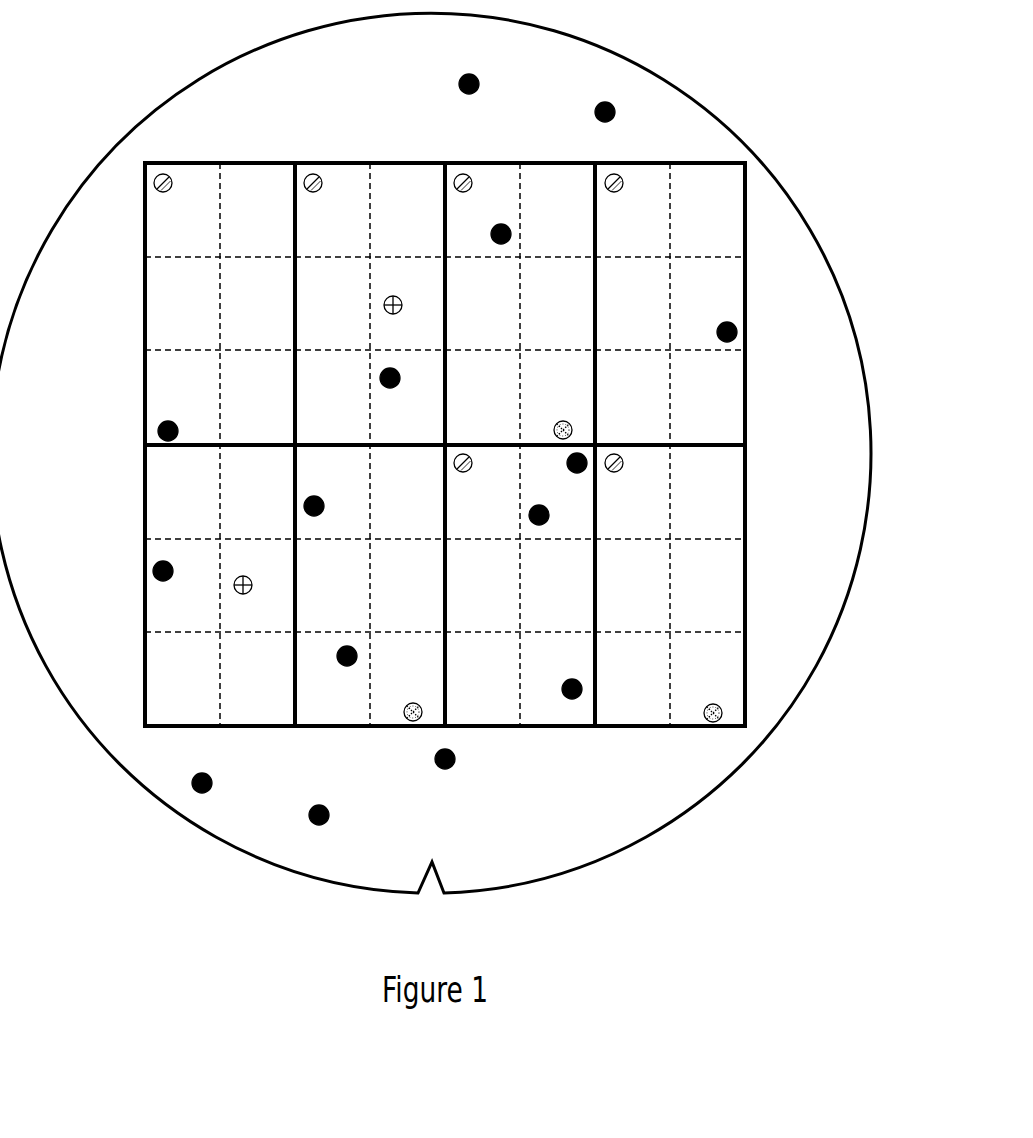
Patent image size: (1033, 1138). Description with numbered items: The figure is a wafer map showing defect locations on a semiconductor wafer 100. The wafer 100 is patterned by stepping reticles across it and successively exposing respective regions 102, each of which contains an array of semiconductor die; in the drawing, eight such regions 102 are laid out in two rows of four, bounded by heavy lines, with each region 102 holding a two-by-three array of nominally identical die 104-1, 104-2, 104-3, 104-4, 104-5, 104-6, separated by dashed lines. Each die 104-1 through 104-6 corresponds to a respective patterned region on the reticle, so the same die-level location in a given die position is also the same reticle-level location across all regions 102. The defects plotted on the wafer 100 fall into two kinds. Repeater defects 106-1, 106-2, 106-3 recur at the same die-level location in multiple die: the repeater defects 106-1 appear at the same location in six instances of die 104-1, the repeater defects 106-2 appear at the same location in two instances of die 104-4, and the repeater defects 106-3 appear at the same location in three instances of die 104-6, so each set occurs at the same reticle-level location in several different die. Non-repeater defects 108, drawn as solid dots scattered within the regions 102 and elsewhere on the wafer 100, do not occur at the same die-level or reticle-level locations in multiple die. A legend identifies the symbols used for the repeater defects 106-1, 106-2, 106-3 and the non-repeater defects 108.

The semiconductor wafer 100 is at (455, 57).
The region 102 is at (195, 163).
The semiconductor die 104-1 is at (205, 246).
The semiconductor die 104-2 is at (280, 246).
The semiconductor die 104-3 is at (205, 340).
The semiconductor die 104-4 is at (280, 340).
The semiconductor die 104-5 is at (205, 382).
The semiconductor die 104-6 is at (280, 382).
The repeater defects 106-1 is at (514, 542).
The repeater defects 106-2 is at (554, 627).
The repeater defects 106-3 is at (639, 715).
The non-repeater defects 108 is at (528, 566).